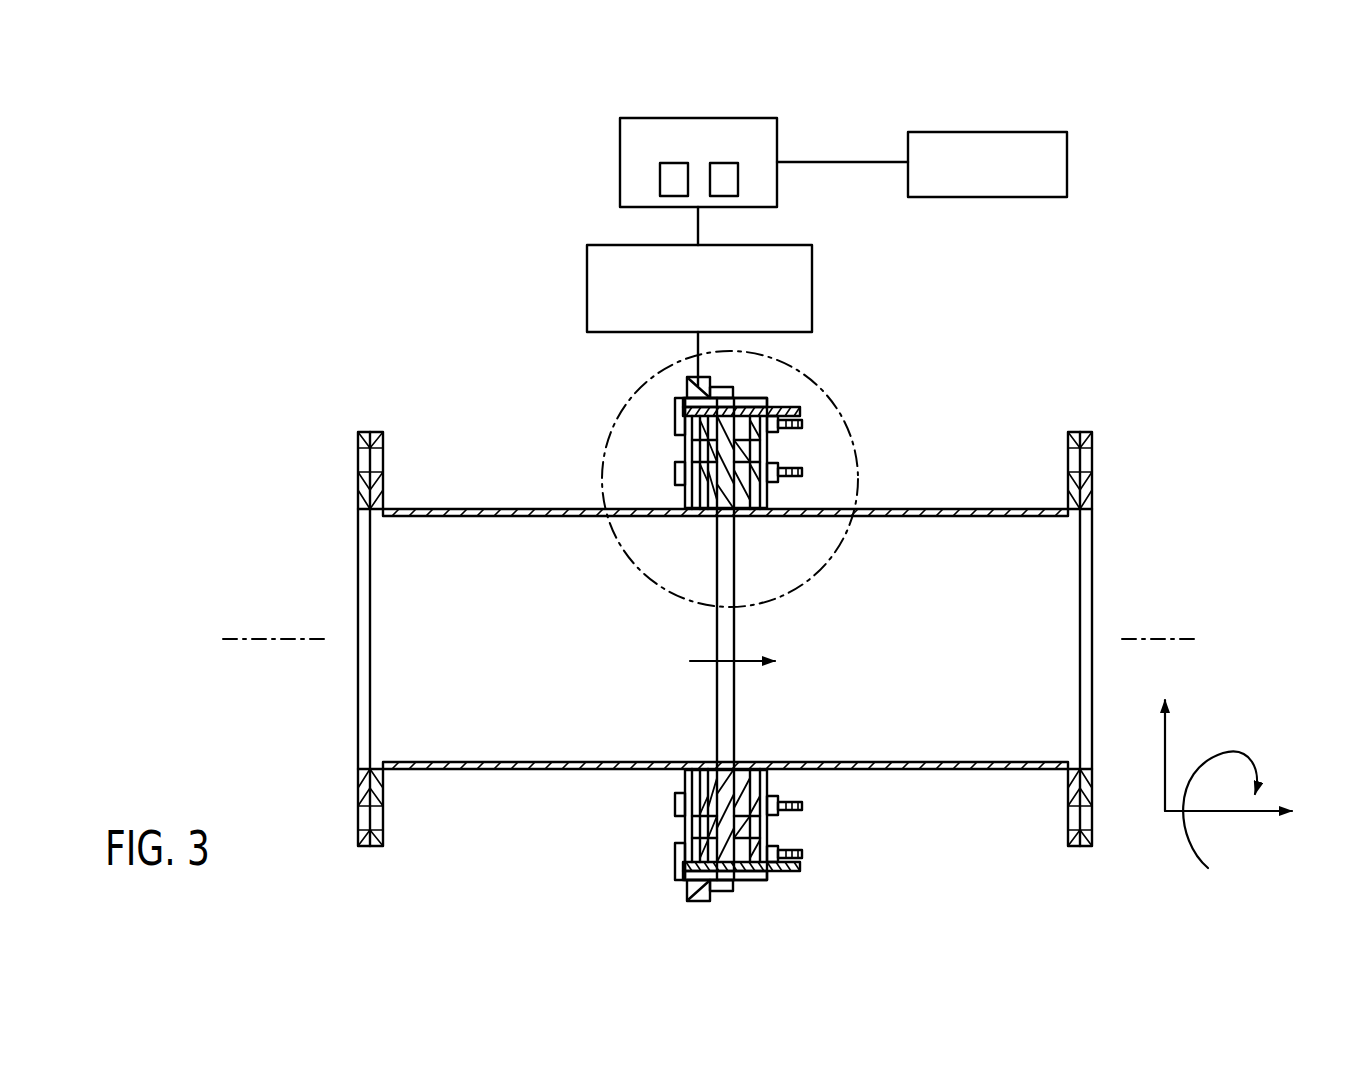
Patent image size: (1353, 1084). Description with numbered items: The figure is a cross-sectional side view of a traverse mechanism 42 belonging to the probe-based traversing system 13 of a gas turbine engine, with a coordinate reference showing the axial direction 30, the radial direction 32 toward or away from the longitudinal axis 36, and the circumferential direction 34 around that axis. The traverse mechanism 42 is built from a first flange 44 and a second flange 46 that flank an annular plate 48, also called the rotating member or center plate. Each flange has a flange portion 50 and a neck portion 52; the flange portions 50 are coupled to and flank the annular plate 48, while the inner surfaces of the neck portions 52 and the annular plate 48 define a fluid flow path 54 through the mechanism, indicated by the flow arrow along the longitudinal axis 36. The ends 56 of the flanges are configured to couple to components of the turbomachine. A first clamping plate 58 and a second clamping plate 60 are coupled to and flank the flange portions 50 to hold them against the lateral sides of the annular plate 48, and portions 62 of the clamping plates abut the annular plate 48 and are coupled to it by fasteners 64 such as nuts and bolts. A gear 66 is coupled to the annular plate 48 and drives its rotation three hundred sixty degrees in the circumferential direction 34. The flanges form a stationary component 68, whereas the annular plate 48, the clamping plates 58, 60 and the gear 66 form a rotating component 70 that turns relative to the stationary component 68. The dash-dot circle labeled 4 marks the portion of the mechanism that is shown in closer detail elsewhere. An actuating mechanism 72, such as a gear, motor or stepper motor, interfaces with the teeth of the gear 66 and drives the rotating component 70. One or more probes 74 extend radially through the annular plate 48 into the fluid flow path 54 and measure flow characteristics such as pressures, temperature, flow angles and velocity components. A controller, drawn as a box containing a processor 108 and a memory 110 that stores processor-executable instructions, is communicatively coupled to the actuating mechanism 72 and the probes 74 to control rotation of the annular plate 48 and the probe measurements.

The probe-based traversing system 13 is at (530, 192).
The memory 110 is at (660, 180).
The processor 108 is at (738, 178).
The probes 74 is at (987, 130).
The actuating mechanism 72 is at (585, 288).
The traverse mechanism 42 is at (547, 332).
The rotating component 70 is at (643, 387).
The gear 66 is at (697, 380).
The portions of the clamping plates 62 is at (753, 405).
The second clamping plate 60 is at (760, 392).
The fasteners 64 is at (803, 408).
The first clamping plate 58 is at (683, 399).
The annular plate 48 is at (720, 462).
The neck portion 52 is at (682, 487).
The stationary component 68 is at (745, 523).
The section view 4 is at (627, 402).
The first flange 44 is at (565, 500).
The second flange 46 is at (875, 507).
The flange portion 50 is at (500, 510).
The ends of the flanges 56 is at (366, 552).
The longitudinal axis 36 is at (273, 638).
The fluid flow path 54 is at (710, 658).
The axial direction 30 is at (1225, 814).
The radial direction 32 is at (1169, 760).
The circumferential direction 34 is at (1190, 832).